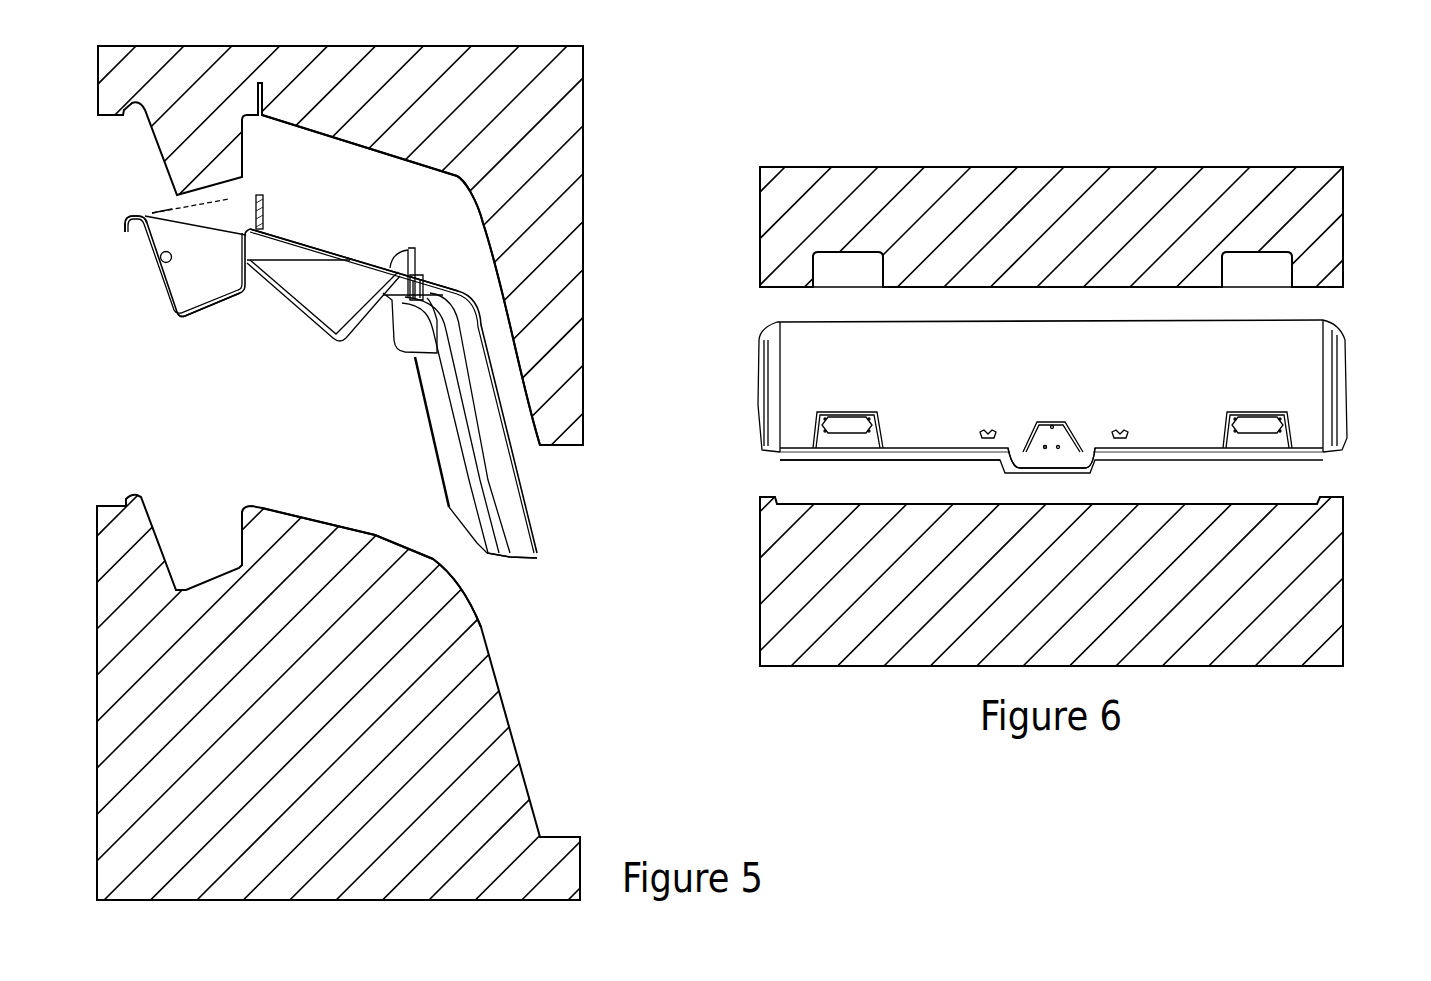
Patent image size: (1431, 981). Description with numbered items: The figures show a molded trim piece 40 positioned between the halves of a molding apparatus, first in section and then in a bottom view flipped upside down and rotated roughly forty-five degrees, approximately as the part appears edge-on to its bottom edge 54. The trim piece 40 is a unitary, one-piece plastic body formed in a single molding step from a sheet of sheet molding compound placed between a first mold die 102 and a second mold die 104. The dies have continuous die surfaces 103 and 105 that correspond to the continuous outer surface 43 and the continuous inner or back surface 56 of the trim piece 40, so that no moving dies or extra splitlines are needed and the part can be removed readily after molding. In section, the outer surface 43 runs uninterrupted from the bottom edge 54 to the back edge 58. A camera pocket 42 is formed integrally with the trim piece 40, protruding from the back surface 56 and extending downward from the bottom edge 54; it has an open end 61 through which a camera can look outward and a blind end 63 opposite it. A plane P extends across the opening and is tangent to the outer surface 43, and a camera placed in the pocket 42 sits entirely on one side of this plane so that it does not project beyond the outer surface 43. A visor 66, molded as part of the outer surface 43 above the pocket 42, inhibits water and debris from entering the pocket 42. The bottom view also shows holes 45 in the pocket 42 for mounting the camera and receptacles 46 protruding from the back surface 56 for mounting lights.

In FIG. 5, the trim piece 40 is at (533, 512).
In FIG. 6, the trim piece 40 is at (1287, 333).
In FIG. 5, the pocket 42 is at (160, 256).
In FIG. 6, the pocket 42 is at (1067, 422).
In FIG. 5, the outer surface 43 is at (345, 242).
In FIG. 6, the holes 45 is at (1044, 449).
In FIG. 6, the receptacles 46 is at (1272, 438).
In FIG. 5, the bottom edge 54 is at (123, 223).
In FIG. 6, the bottom edge 54 is at (822, 452).
In FIG. 5, the inner or back surface 56 is at (481, 375).
In FIG. 5, the back edge 58 is at (538, 565).
In FIG. 5, the open end 61 is at (231, 195).
In FIG. 5, the blind end 63 is at (197, 298).
In FIG. 5, the visor 66 is at (260, 195).
In FIG. 6, the visor 66 is at (1090, 466).
In FIG. 5, the first mold die 102 is at (485, 679).
In FIG. 6, the first mold die 102 is at (1325, 190).
In FIG. 5, the die surface 103 is at (297, 507).
In FIG. 6, the die surface 103 is at (1327, 290).
In FIG. 5, the second mold die 104 is at (555, 437).
In FIG. 6, the second mold die 104 is at (1321, 570).
In FIG. 5, the die surface 105 is at (362, 147).
In FIG. 6, the die surface 105 is at (1309, 498).
In FIG. 5, the plane P is at (172, 209).